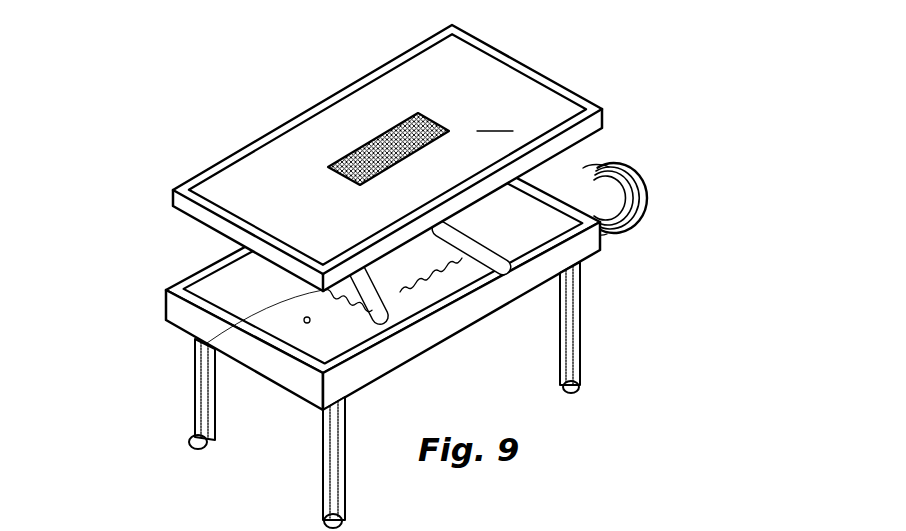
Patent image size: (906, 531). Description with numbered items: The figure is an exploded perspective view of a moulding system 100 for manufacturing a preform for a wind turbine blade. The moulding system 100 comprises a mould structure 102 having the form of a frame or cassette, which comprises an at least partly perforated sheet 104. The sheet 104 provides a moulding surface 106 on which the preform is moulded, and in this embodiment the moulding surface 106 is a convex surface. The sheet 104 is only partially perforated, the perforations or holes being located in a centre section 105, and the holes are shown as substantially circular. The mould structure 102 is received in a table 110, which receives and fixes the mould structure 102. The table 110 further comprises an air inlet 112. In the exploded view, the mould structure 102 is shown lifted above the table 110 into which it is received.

The moulding system 100 is at (189, 96).
The mould structure 102 is at (604, 111).
The at least partly perforated sheet 104 is at (497, 77).
The centre section 105 is at (340, 153).
The moulding surface 106 is at (495, 120).
The table 110 is at (600, 239).
The air inlet 112 is at (207, 347).